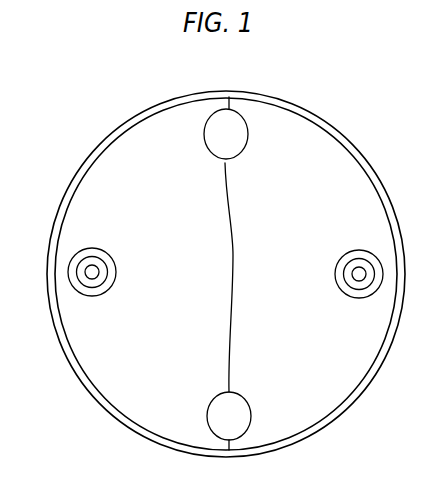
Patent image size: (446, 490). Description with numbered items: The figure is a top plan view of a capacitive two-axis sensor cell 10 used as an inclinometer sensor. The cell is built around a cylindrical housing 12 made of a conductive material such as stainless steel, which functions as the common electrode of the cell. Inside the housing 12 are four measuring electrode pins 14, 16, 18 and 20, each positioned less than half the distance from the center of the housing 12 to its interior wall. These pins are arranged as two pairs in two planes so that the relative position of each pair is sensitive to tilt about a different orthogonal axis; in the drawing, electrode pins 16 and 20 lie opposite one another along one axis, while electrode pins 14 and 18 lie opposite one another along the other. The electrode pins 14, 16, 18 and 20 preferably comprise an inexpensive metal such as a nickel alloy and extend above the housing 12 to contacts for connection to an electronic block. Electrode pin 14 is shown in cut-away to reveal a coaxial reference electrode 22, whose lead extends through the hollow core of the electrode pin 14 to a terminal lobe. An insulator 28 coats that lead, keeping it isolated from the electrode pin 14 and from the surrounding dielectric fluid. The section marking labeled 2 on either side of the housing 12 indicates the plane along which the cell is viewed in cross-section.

The capacitive two-axis sensor cell 10 is at (102, 120).
The housing 12 is at (333, 130).
The measuring electrode pin 14 is at (107, 290).
The measuring electrode pin 16 is at (237, 113).
The measuring electrode pin 18 is at (362, 250).
The measuring electrode pin 20 is at (241, 395).
The coaxial reference electrode 22 is at (92, 267).
The insulator 28 is at (82, 291).
The section line 2- 2 is at (68, 271).